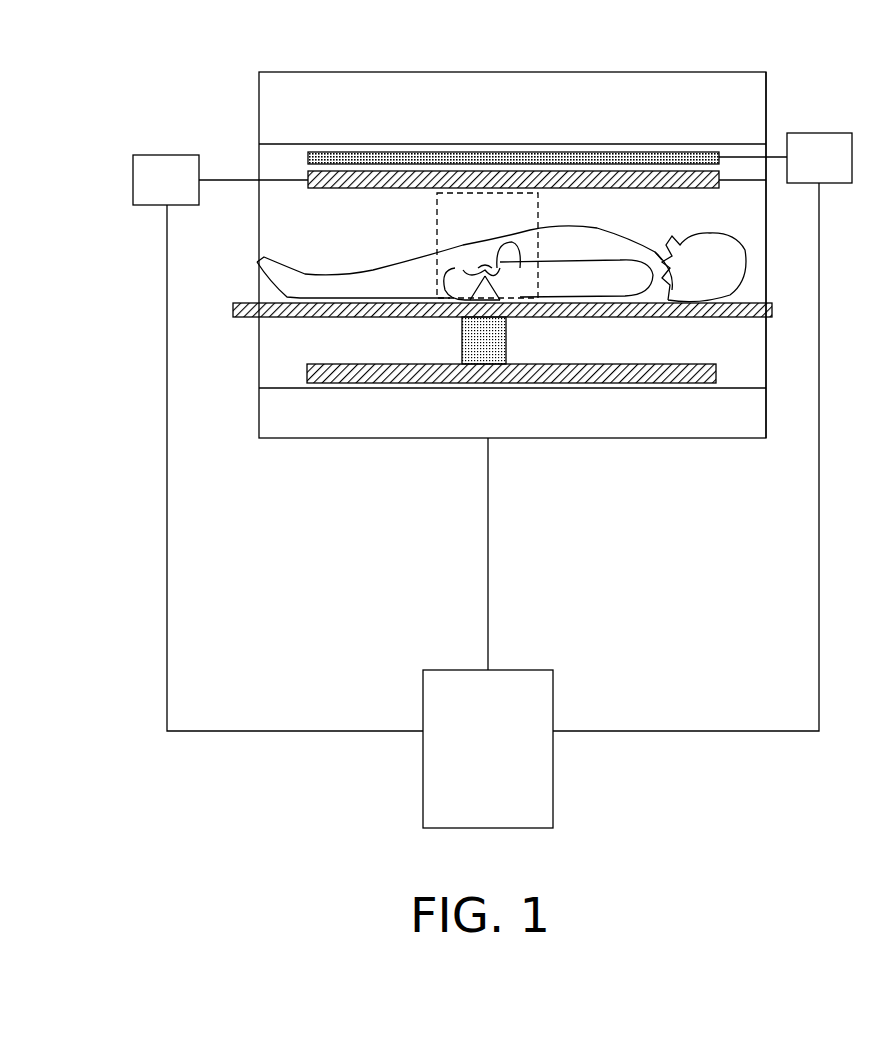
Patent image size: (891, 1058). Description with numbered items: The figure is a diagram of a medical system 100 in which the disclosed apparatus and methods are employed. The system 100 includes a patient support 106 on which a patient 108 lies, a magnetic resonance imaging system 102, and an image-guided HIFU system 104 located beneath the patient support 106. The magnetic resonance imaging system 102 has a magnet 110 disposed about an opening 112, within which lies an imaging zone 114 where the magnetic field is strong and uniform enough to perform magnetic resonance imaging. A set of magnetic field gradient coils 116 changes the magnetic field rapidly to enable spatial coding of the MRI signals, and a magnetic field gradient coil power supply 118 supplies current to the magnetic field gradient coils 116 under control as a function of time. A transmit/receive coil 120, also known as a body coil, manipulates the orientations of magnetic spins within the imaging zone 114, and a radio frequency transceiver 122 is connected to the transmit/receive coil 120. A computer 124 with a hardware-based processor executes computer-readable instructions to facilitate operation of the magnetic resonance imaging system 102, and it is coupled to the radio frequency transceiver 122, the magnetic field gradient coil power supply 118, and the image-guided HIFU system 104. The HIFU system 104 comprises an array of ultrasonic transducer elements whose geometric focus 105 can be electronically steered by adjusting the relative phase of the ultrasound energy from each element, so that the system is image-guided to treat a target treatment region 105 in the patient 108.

The medical system 100 is at (174, 46).
The magnetic resonance imaging system 102 is at (254, 66).
The image-guided HIFU system 104 is at (462, 345).
The geometric focus / target treatment region 105 is at (486, 268).
The patient support 106 is at (235, 305).
The patient 108 is at (745, 260).
The magnet 110 is at (767, 93).
The opening 112 is at (292, 237).
The imaging zone 114 is at (437, 218).
The magnetic field gradient coils 116 is at (308, 158).
The magnetic field gradient coil power supply 118 is at (819, 133).
The transmit/receive coil 120 is at (766, 180).
The radio frequency transceiver 122 is at (167, 155).
The computer 124 is at (423, 692).